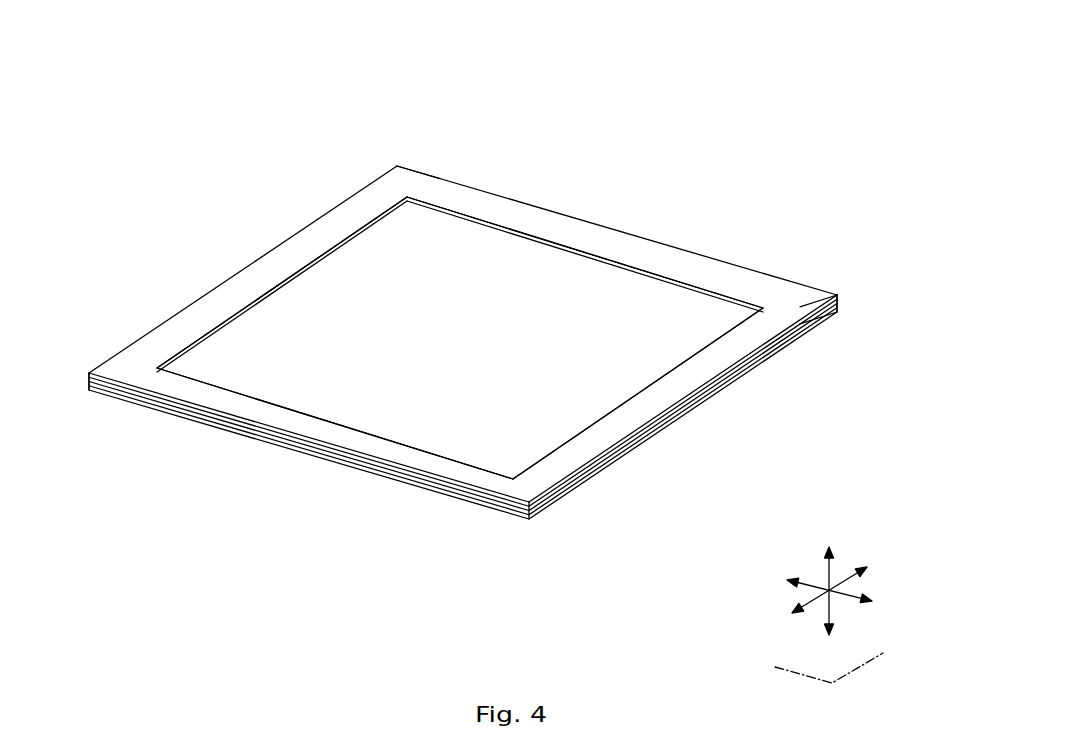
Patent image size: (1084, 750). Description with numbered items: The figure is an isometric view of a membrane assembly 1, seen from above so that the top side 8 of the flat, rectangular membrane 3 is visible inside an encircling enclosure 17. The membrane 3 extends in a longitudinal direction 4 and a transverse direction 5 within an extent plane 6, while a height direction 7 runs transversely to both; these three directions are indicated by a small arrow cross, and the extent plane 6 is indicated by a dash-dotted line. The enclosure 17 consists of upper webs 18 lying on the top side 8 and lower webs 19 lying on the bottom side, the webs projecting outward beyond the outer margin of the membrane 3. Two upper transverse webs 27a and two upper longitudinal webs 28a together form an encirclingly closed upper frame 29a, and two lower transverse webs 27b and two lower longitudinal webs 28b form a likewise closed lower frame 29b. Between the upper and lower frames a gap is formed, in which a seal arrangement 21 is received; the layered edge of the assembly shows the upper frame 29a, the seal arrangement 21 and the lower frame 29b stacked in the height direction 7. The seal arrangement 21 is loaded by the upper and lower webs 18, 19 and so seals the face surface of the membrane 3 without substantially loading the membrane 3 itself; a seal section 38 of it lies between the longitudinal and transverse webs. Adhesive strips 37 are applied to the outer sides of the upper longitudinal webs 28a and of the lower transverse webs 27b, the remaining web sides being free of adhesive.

The membrane assembly 1 is at (794, 125).
The enclosure 17 is at (640, 174).
The upper web 18 is at (469, 325).
The lower web 19 is at (463, 426).
The upper transverse web 27a is at (258, 272).
The lower transverse web 27b is at (675, 422).
The upper longitudinal web 28a is at (513, 231).
The lower longitudinal web 28b is at (380, 472).
The adhesive strip 37 is at (397, 181).
The seal section 38 is at (708, 400).
The upper frame 29a is at (846, 295).
The lower frame 29b is at (846, 319).
The seal arrangement 21 is at (847, 306).
The membrane 3 is at (460, 338).
The top side 8 is at (523, 354).
The longitudinal direction 4 is at (812, 591).
The transverse direction 5 is at (840, 579).
The height direction 7 is at (826, 574).
The extent plane 6 is at (802, 674).